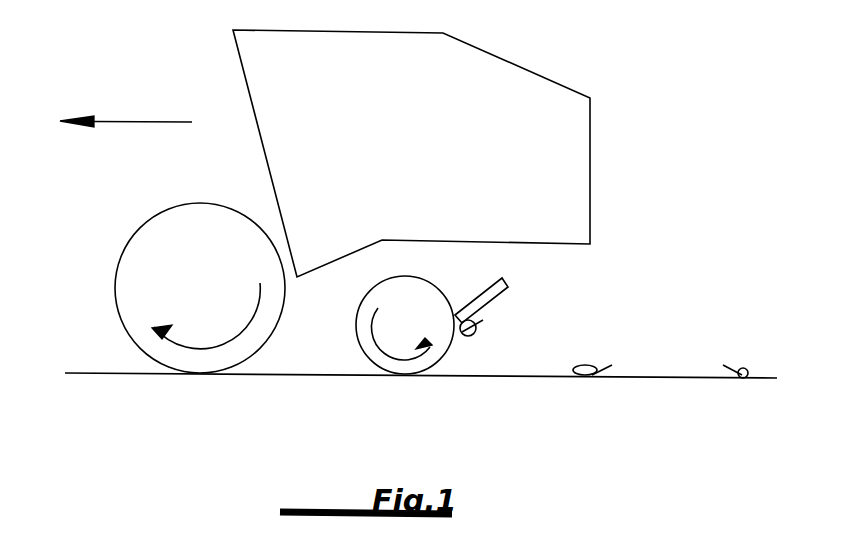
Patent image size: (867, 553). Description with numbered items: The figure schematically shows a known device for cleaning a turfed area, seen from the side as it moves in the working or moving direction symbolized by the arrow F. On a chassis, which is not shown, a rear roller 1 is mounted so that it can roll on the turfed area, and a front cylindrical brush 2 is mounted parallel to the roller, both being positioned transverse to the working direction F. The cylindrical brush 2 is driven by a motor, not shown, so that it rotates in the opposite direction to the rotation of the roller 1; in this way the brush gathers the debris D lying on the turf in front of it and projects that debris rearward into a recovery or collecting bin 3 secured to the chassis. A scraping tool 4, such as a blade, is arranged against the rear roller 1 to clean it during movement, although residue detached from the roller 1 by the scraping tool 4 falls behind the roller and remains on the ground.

The rear roller 1 is at (433, 332).
The front cylindrical brush 2 is at (140, 287).
The rear recovery or collecting bin 3 is at (411, 153).
The scraping tool 4 is at (490, 295).
The debris D is at (583, 368).
The working or moving direction F is at (145, 121).